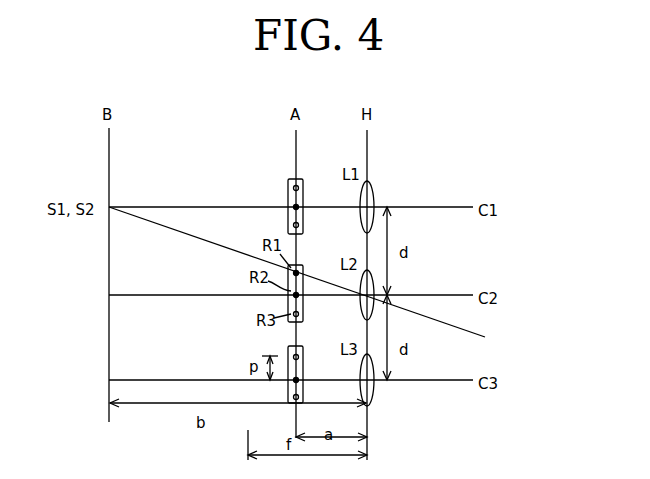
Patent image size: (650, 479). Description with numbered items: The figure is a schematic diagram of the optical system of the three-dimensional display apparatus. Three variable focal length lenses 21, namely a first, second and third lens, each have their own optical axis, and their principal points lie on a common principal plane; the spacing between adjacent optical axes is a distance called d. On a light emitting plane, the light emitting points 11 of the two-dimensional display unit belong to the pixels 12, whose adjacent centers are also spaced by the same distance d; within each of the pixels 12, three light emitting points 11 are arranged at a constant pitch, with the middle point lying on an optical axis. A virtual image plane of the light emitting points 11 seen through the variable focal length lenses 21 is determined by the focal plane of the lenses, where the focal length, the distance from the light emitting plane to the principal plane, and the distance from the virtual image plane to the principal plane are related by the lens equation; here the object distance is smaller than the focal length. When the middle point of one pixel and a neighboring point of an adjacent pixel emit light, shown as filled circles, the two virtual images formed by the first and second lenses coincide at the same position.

The light emitting points 11 is at (293, 187).
The pixels 12 is at (249, 283).
The variable focal length lenses 21 is at (375, 193).